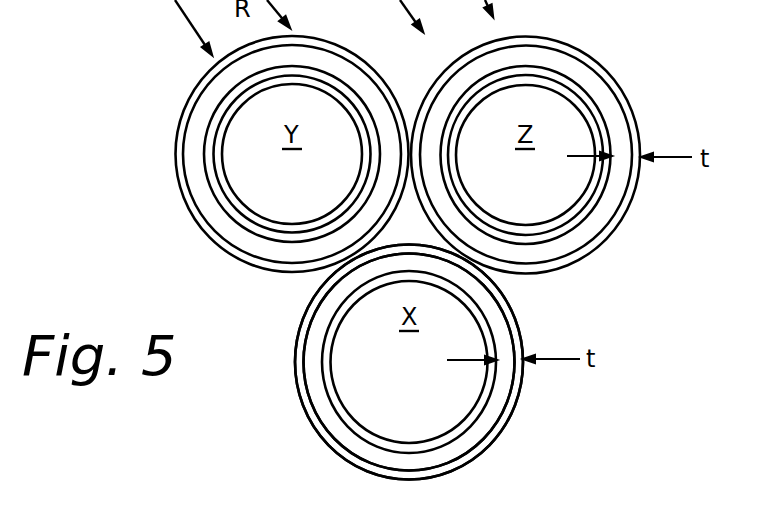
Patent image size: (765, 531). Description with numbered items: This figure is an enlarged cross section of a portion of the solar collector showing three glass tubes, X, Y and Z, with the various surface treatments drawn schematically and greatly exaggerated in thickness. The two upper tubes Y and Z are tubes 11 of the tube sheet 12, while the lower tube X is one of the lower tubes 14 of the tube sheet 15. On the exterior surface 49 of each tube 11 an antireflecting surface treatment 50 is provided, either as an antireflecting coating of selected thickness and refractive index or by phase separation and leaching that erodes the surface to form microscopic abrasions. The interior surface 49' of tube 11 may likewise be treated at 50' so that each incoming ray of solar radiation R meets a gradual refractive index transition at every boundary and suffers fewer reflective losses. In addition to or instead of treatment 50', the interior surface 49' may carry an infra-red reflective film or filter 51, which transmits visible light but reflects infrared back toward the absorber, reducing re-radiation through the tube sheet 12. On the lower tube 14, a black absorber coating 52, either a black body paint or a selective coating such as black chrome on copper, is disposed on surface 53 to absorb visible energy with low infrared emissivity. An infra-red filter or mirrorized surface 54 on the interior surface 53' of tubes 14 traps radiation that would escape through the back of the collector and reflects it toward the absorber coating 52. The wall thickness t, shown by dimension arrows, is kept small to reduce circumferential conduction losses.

The tubes 11 is at (618, 198).
The tube sheet 12 is at (620, 83).
The lower tubes 14 is at (315, 335).
The tube sheet 15 is at (522, 397).
The exterior surface 49 is at (268, 154).
The interior surface 49' is at (241, 154).
The antireflecting surface treatment 50 is at (292, 167).
The interior surface treatment 50' is at (234, 154).
The infra-red reflective film or filter 51 is at (243, 103).
The black absorber coating 52 is at (300, 402).
The surface 53 is at (385, 364).
The interior surface 53' is at (394, 393).
The infra-red filter or mirrorized surface 54 is at (328, 347).